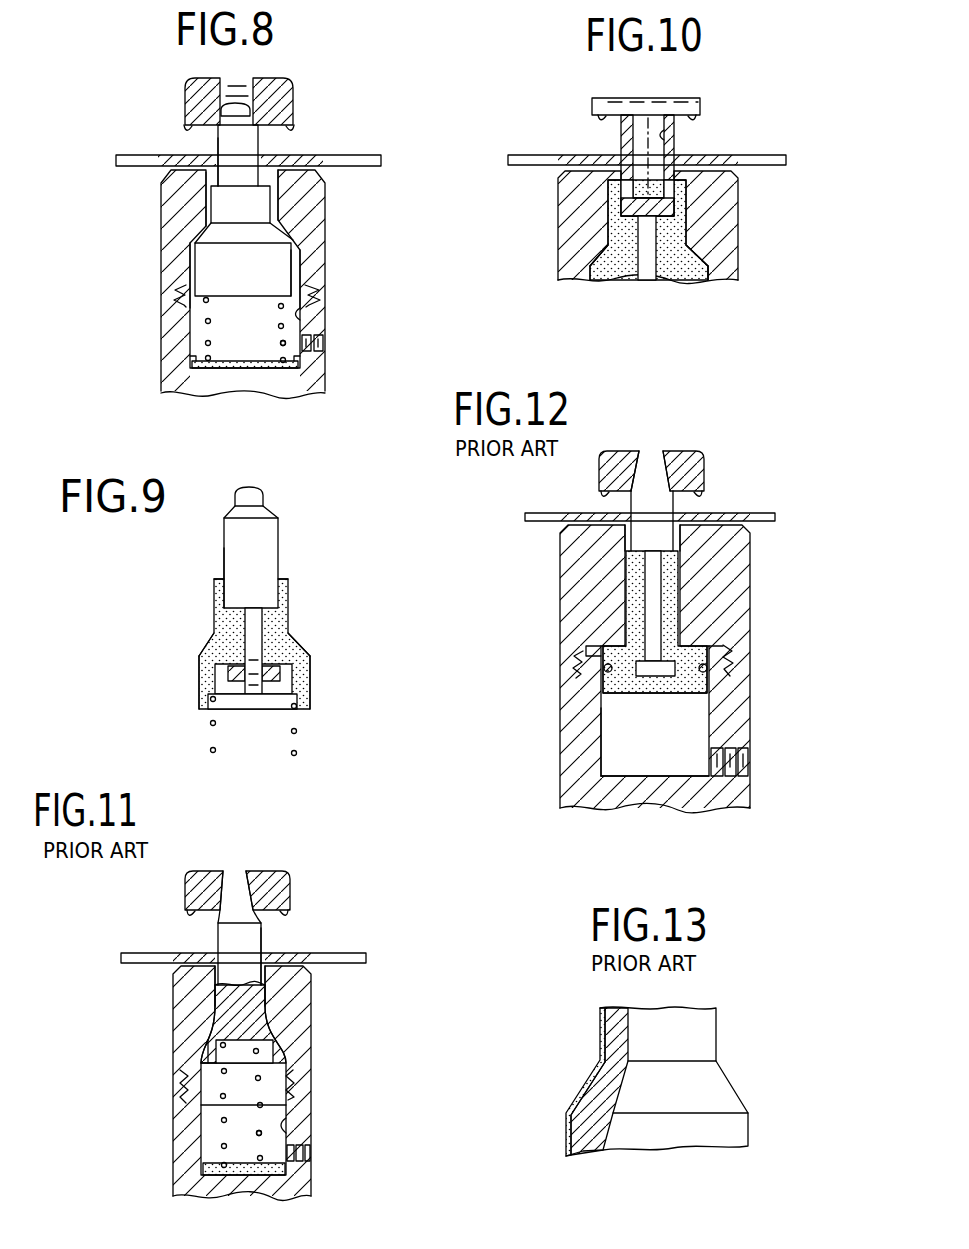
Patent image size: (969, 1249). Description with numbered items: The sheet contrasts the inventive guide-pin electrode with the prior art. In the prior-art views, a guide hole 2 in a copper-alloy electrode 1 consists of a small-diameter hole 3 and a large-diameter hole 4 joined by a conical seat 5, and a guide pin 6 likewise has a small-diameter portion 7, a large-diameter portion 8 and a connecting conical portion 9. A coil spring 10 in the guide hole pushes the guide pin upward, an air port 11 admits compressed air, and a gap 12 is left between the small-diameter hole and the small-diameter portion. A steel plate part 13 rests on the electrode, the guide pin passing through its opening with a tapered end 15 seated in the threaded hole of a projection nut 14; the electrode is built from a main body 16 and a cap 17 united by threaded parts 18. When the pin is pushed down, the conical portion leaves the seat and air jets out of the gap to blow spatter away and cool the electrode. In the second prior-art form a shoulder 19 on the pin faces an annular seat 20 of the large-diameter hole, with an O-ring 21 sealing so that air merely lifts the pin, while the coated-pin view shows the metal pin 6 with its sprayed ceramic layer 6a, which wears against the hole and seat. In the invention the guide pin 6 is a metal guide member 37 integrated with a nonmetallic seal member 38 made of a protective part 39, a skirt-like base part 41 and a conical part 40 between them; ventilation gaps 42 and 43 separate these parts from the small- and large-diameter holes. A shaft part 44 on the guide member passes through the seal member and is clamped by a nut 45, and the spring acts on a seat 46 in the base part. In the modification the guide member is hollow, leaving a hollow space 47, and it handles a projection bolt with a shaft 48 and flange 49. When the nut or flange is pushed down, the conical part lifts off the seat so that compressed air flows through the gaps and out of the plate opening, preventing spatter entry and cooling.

In FIG. 8, the electrode 1 is at (101, 250).
In FIG. 12, the electrode 1 is at (500, 587).
In FIG. 11, the electrode 1 is at (134, 1021).
In FIG. 8, the guide hole 2 is at (196, 323).
In FIG. 12, the guide hole 2 is at (600, 742).
In FIG. 11, the guide hole 2 is at (198, 1140).
In FIG. 8, the small-diameter hole 3 is at (253, 195).
In FIG. 12, the small-diameter hole 3 is at (672, 545).
In FIG. 11, the small-diameter hole 3 is at (257, 982).
In FIG. 8, the large-diameter hole 4 is at (295, 308).
In FIG. 12, the large-diameter hole 4 is at (600, 760).
In FIG. 11, the large-diameter hole 4 is at (278, 1115).
In FIG. 8, the conical seat 5 is at (262, 232).
In FIG. 11, the conical seat 5 is at (282, 1053).
In FIG. 8, the guide pin 6 is at (268, 135).
In FIG. 9, the guide pin 6 is at (203, 544).
In FIG. 12, the guide pin 6 is at (682, 493).
In FIG. 11, the guide pin 6 is at (265, 930).
In FIG. 13, the guide pin 6 is at (556, 1082).
In FIG. 13, the skin layer 6a is at (590, 1067).
In FIG. 12, the small-diameter portion 7 is at (616, 575).
In FIG. 11, the small-diameter portion 7 is at (207, 930).
In FIG. 13, the small-diameter portion 7 is at (702, 1020).
In FIG. 12, the large-diameter portion 8 is at (595, 685).
In FIG. 11, the large-diameter portion 8 is at (203, 1048).
In FIG. 13, the large-diameter portion 8 is at (728, 1125).
In FIG. 11, the conical portion 9 is at (262, 1010).
In FIG. 13, the conical portion 9 is at (713, 1082).
In FIG. 8, the coil spring 10 is at (272, 337).
In FIG. 9, the coil spring 10 is at (291, 744).
In FIG. 11, the coil spring 10 is at (252, 1125).
In FIG. 8, the air port 11 is at (315, 333).
In FIG. 12, the air port 11 is at (742, 750).
In FIG. 11, the air port 11 is at (302, 1143).
In FIG. 12, the gap 12 is at (618, 530).
In FIG. 11, the gap 12 is at (207, 978).
In FIG. 8, the steel plate part 13 is at (362, 147).
In FIG. 10, the steel plate part 13 is at (768, 157).
In FIG. 12, the steel plate part 13 is at (760, 505).
In FIG. 11, the steel plate part 13 is at (345, 943).
In FIG. 8, the projection nut 14 is at (280, 77).
In FIG. 12, the projection nut 14 is at (698, 458).
In FIG. 11, the projection nut 14 is at (283, 878).
In FIG. 8, the tapered end 15 is at (222, 102).
In FIG. 12, the tapered end 15 is at (641, 465).
In FIG. 11, the tapered end 15 is at (228, 878).
In FIG. 8, the main body 16 is at (155, 378).
In FIG. 12, the main body 16 is at (552, 795).
In FIG. 11, the main body 16 is at (165, 1182).
In FIG. 8, the cap 17 is at (199, 287).
In FIG. 12, the cap 17 is at (618, 669).
In FIG. 11, the cap 17 is at (197, 1089).
In FIG. 8, the threaded parts 18 is at (168, 287).
In FIG. 12, the threaded parts 18 is at (723, 665).
In FIG. 11, the threaded parts 18 is at (167, 1080).
In FIG. 12, the shoulder 19 is at (700, 635).
In FIG. 12, the annular seat 20 is at (588, 642).
In FIG. 12, the flange 21 is at (687, 663).
In FIG. 8, the guide member 37 is at (212, 135).
In FIG. 10, the guide member 37 is at (612, 125).
In FIG. 9, the guide member 37 is at (260, 535).
In FIG. 8, the seal member 38 is at (294, 250).
In FIG. 10, the seal member 38 is at (615, 280).
In FIG. 9, the seal member 38 is at (142, 573).
In FIG. 8, the protective part 39 is at (265, 202).
In FIG. 10, the protective part 39 is at (677, 198).
In FIG. 9, the protective part 39 is at (206, 590).
In FIG. 8, the conical part 40 is at (200, 225).
In FIG. 10, the conical part 40 is at (685, 238).
In FIG. 9, the conical part 40 is at (198, 633).
In FIG. 8, the base part 41 is at (288, 265).
In FIG. 10, the base part 41 is at (702, 265).
In FIG. 9, the base part 41 is at (191, 678).
In FIG. 8, the ventilation gap 42 is at (198, 202).
In FIG. 10, the ventilation gap 42 is at (595, 208).
In FIG. 8, the ventilation gap 43 is at (185, 262).
In FIG. 10, the ventilation gap 43 is at (580, 257).
In FIG. 10, the shaft part 44 is at (662, 275).
In FIG. 9, the shaft part 44 is at (248, 628).
In FIG. 9, the nut 45 is at (270, 668).
In FIG. 9, the seat 46 is at (228, 688).
In FIG. 10, the hollow space 47 is at (658, 130).
In FIG. 10, the shaft 48 is at (612, 138).
In FIG. 10, the flange 49 is at (697, 100).